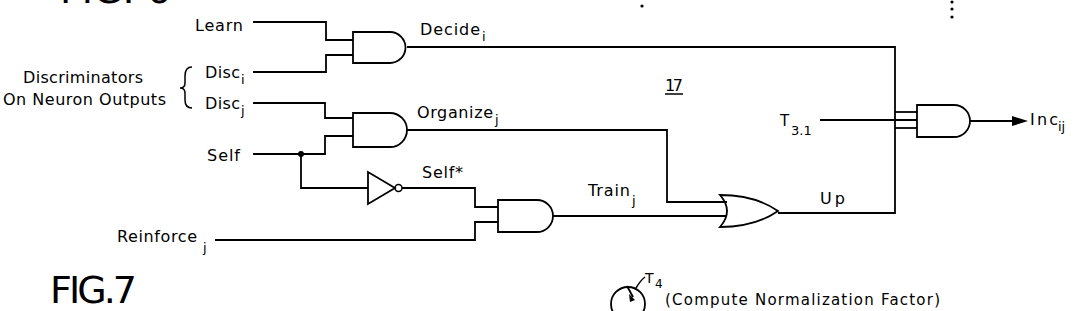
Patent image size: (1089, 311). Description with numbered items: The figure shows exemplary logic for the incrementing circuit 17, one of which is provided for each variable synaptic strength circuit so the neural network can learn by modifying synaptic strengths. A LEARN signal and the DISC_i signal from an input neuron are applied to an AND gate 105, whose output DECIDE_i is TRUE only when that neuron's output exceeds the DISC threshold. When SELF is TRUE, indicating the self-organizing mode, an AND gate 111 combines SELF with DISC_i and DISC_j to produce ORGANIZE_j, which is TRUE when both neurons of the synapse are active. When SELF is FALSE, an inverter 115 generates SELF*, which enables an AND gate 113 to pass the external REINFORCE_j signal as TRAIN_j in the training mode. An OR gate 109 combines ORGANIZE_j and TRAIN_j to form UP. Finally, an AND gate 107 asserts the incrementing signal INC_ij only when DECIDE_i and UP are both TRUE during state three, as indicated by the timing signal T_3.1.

The incrementing circuit 17 is at (621, 131).
The AND gate 105 is at (372, 32).
The AND gate 111 is at (372, 113).
The AND gate 113 is at (520, 200).
The OR gate 109 is at (748, 195).
The AND gate 107 is at (935, 105).
The inverter 115 is at (368, 198).